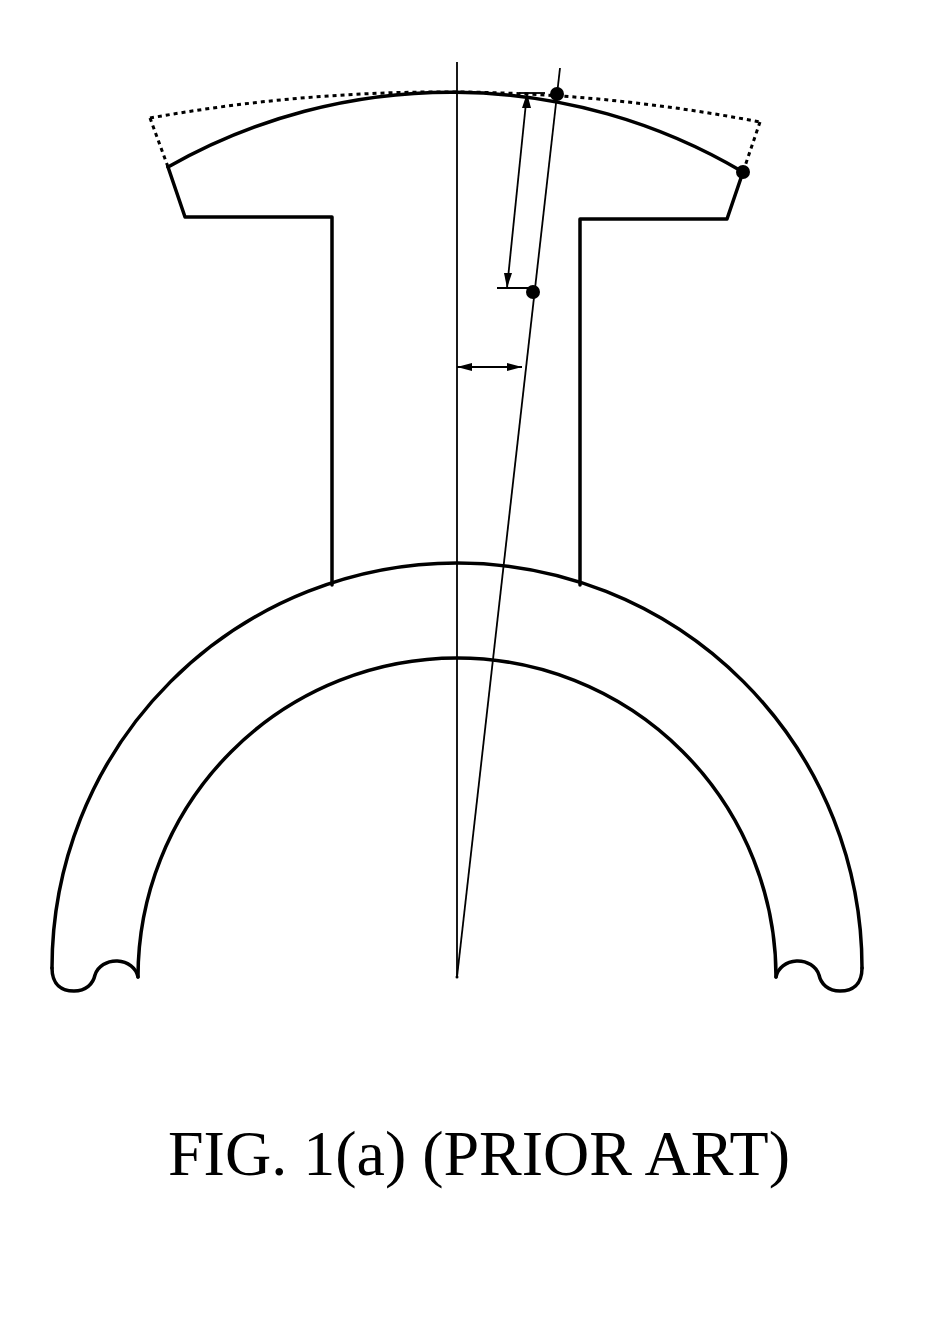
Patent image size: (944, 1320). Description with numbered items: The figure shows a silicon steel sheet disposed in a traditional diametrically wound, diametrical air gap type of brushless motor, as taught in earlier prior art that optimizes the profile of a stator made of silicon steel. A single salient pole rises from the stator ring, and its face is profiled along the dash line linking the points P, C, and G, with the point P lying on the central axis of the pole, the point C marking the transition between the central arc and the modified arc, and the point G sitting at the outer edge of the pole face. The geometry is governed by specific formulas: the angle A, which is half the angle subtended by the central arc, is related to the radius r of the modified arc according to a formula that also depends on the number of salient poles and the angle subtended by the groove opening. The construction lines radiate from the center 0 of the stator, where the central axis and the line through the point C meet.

The point P on pole profile P is at (458, 499).
The point C on pole profile C is at (560, 64).
The point G on pole profile G is at (758, 187).
The radius of the modified arc r is at (511, 196).
The angle of the central arc A is at (489, 344).
The center point 0 is at (457, 998).